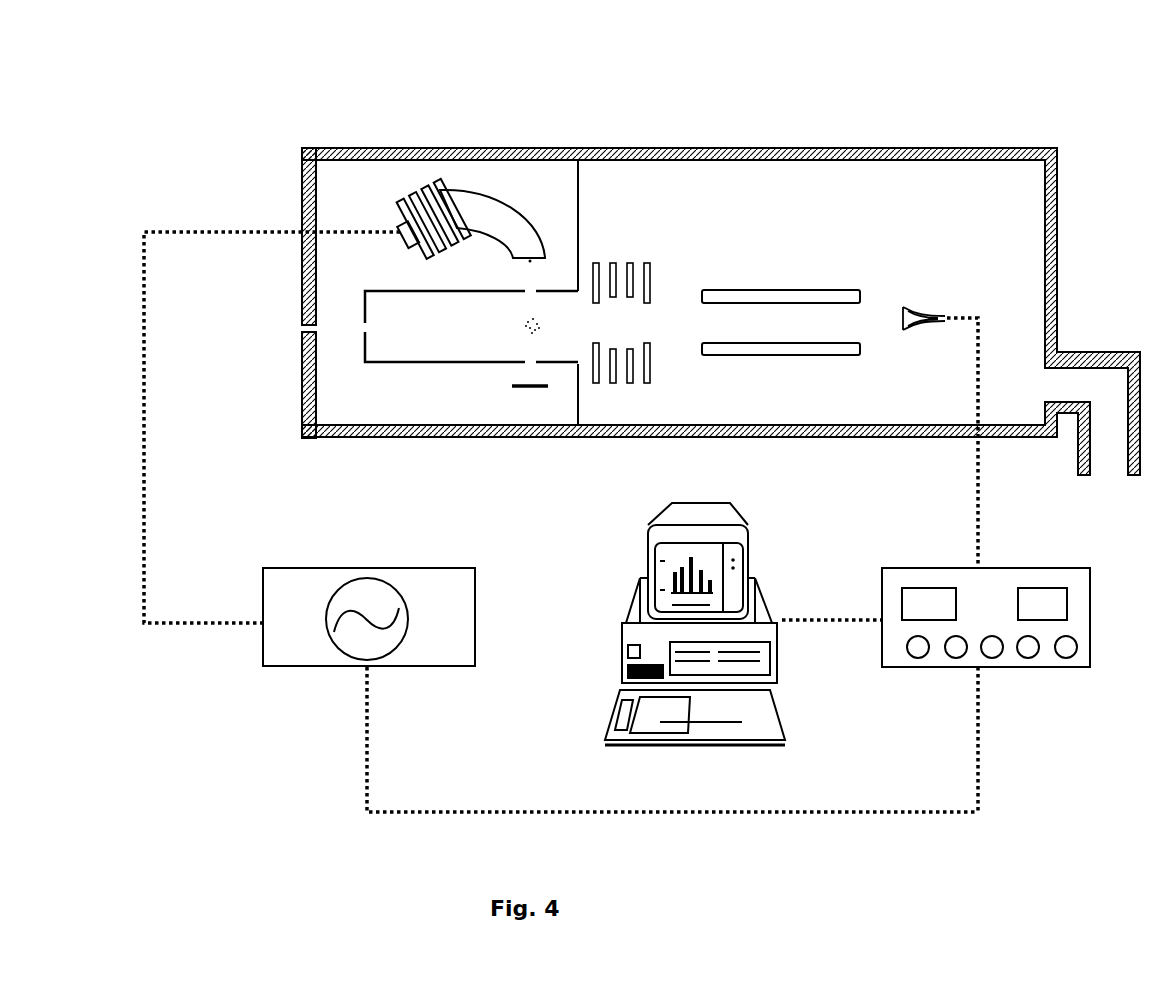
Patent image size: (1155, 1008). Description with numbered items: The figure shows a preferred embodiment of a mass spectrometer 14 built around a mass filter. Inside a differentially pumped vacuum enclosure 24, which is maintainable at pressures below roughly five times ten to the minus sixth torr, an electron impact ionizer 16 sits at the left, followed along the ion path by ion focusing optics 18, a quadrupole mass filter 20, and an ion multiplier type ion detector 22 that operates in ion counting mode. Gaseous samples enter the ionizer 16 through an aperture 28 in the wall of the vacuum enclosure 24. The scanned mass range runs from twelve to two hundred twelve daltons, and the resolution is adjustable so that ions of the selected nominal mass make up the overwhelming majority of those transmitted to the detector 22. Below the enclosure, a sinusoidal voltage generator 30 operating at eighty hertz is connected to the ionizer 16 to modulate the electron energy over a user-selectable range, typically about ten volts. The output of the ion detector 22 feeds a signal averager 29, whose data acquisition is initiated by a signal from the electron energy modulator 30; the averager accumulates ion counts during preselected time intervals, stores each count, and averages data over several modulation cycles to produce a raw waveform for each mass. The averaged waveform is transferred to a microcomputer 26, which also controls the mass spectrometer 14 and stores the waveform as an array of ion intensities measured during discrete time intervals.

The mass spectrometer 14 is at (659, 259).
The electron impact ionizer 16 is at (476, 203).
The ion focusing optics 18 is at (619, 247).
The quadrupole mass filter 20 is at (796, 278).
The ion detector 22 is at (923, 300).
The vacuum enclosure 24 is at (1028, 138).
The microcomputer 26 is at (628, 566).
The aperture 28 is at (296, 341).
The signal averager 29 is at (986, 674).
The sinusoidal voltage generator 30 is at (295, 674).